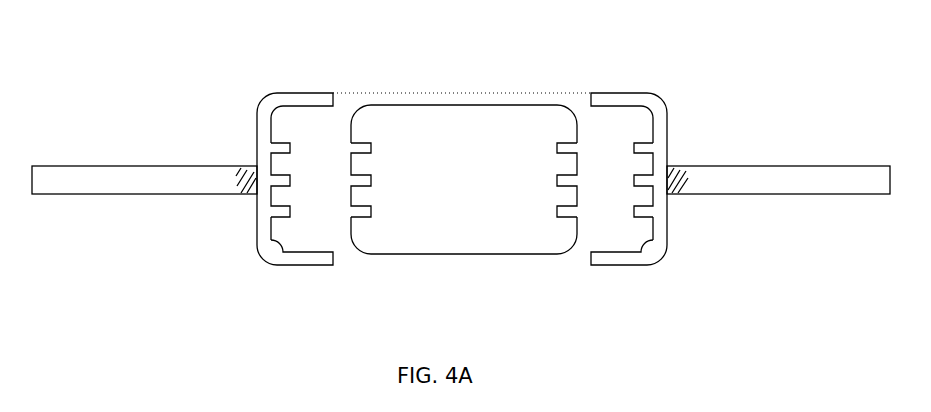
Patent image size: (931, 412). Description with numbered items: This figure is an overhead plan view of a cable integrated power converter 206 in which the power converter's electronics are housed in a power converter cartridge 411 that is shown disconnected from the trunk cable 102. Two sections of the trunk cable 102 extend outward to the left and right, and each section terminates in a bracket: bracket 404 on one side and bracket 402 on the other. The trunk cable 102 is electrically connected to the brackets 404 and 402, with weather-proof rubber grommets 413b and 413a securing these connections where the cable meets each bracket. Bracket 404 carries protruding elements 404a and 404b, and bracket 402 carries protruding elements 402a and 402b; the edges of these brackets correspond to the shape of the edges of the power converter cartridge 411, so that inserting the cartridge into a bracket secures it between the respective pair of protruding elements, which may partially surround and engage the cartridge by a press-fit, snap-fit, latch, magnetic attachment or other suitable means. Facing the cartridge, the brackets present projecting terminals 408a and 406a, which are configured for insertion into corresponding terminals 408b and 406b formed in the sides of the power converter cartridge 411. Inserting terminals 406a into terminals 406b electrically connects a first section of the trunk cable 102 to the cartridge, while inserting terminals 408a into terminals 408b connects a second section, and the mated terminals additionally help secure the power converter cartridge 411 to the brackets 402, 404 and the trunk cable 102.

The trunk cable 102 is at (50, 166).
The connector assembly 206 is at (465, 42).
The bracket 402 is at (660, 191).
The protruding element 402a is at (613, 93).
The protruding element 402b is at (632, 266).
The bracket 404 is at (291, 190).
The protruding element 404a is at (294, 94).
The protruding element 404b is at (305, 266).
The projecting terminal 406a is at (632, 149).
The terminal 406b is at (557, 150).
The projecting terminal 408a is at (291, 146).
The terminal 408b is at (371, 150).
The power converter cartridge 411 is at (464, 215).
The weather-proof rubber grommet 413a is at (678, 170).
The weather-proof rubber grommet 413b is at (255, 165).